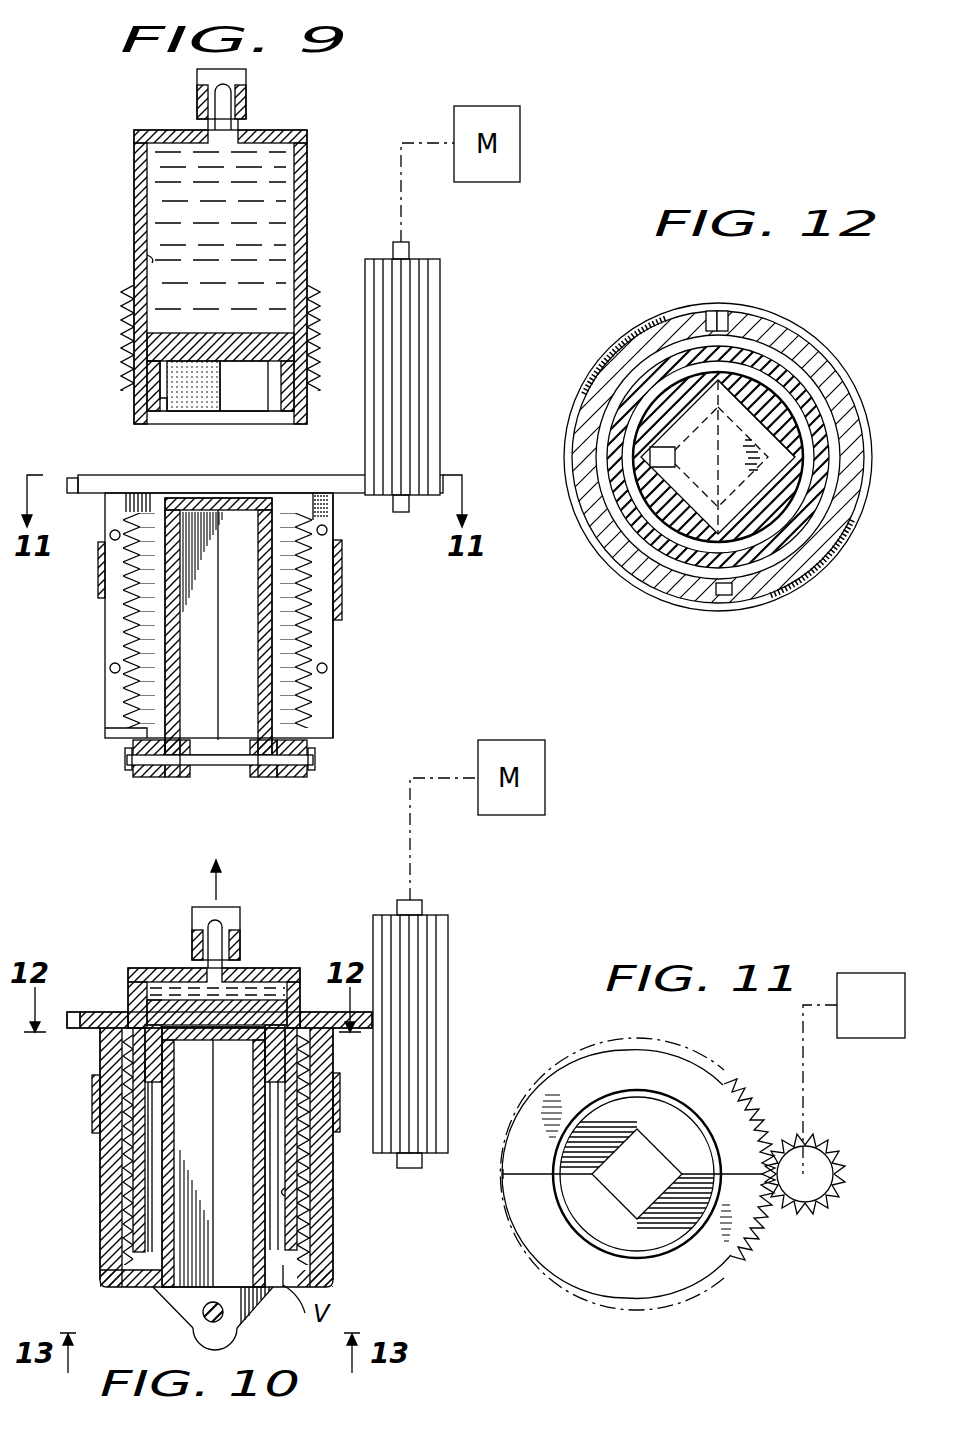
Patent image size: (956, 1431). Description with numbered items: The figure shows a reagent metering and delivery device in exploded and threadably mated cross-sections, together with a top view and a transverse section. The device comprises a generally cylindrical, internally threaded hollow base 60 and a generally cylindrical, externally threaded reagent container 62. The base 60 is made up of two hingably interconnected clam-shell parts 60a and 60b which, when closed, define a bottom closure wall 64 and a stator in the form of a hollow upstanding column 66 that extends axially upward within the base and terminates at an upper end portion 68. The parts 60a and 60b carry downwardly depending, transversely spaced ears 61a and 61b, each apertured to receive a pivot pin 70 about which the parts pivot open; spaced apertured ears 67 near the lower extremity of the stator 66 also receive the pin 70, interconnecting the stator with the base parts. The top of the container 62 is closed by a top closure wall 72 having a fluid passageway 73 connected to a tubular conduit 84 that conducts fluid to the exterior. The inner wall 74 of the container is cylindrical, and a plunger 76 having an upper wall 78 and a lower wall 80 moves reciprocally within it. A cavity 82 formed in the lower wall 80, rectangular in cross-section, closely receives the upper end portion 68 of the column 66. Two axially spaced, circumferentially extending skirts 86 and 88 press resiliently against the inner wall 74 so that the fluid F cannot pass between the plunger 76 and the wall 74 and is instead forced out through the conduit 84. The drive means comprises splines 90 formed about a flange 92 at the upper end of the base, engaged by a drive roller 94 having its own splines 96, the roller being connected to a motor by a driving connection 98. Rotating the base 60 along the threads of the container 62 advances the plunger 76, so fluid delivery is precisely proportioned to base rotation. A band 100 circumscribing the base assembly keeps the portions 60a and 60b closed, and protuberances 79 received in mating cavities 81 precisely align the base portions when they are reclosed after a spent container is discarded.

In FIG. 9, the hollow base 60 is at (325, 621).
In FIG. 10, the hollow base 60 is at (98, 1174).
In FIG. 11, the hollow base 60 is at (566, 1300).
In FIG. 12, the hollow base 60 is at (790, 343).
In FIG. 9, the base part 60a is at (333, 700).
In FIG. 10, the base part 60a is at (325, 1240).
In FIG. 11, the base part 60a is at (675, 1065).
In FIG. 12, the base part 60a is at (813, 548).
In FIG. 10, the base part 60b is at (100, 1230).
In FIG. 11, the base part 60b is at (680, 1280).
In FIG. 12, the base part 60b is at (633, 571).
In FIG. 9, the ear 61a is at (160, 778).
In FIG. 10, the ear 61a is at (255, 1308).
In FIG. 9, the ear 61b is at (133, 778).
In FIG. 10, the ear 61b is at (173, 1302).
In FIG. 9, the reagent container 62 is at (134, 210).
In FIG. 10, the reagent container 62 is at (133, 1150).
In FIG. 12, the reagent container 62 is at (806, 372).
In FIG. 9, the bottom closure wall 64 is at (147, 733).
In FIG. 10, the bottom closure wall 64 is at (123, 1280).
In FIG. 11, the bottom closure wall 64 is at (587, 1210).
In FIG. 9, the stator 66 is at (258, 657).
In FIG. 10, the stator 66 is at (257, 1155).
In FIG. 11, the stator 66 is at (618, 1216).
In FIG. 12, the stator 66 is at (755, 453).
In FIG. 9, the apertured ears 67 is at (180, 777).
In FIG. 10, the apertured ears 67 is at (200, 1313).
In FIG. 9, the upper end portion 68 is at (240, 502).
In FIG. 11, the upper end portion 68 is at (622, 1152).
In FIG. 12, the upper end portion 68 is at (682, 498).
In FIG. 9, the pivot pin 70 is at (222, 765).
In FIG. 10, the pivot pin 70 is at (218, 1302).
In FIG. 9, the top closure wall 72 is at (154, 130).
In FIG. 10, the top closure wall 72 is at (278, 968).
In FIG. 9, the fluid passageway 73 is at (226, 90).
In FIG. 10, the fluid passageway 73 is at (222, 932).
In FIG. 9, the inner wall 74 is at (147, 258).
In FIG. 10, the inner wall 74 is at (285, 1192).
In FIG. 9, the plunger 76 is at (147, 366).
In FIG. 10, the plunger 76 is at (175, 983).
In FIG. 12, the plunger 76 is at (786, 480).
In FIG. 9, the upper wall 78 is at (201, 333).
In FIG. 10, the upper wall 78 is at (233, 1003).
In FIG. 12, the upper wall 78 is at (777, 416).
In FIG. 9, the protuberances 79 is at (327, 668).
In FIG. 12, the protuberances 79 is at (728, 308).
In FIG. 9, the lower wall 80 is at (160, 413).
In FIG. 10, the lower wall 80 is at (270, 1055).
In FIG. 9, the mating cavities 81 is at (110, 668).
In FIG. 12, the mating cavities 81 is at (705, 310).
In FIG. 9, the cavity 82 is at (268, 396).
In FIG. 10, the cavity 82 is at (165, 1058).
In FIG. 12, the cavity 82 is at (666, 478).
In FIG. 9, the tubular conduit 84 is at (197, 76).
In FIG. 10, the tubular conduit 84 is at (192, 913).
In FIG. 9, the skirt 86 is at (155, 337).
In FIG. 10, the skirt 86 is at (143, 1007).
In FIG. 9, the skirt 88 is at (140, 408).
In FIG. 10, the skirt 88 is at (145, 1070).
In FIG. 9, the splines 90 is at (67, 482).
In FIG. 10, the splines 90 is at (68, 1028).
In FIG. 11, the splines 90 is at (757, 1238).
In FIG. 9, the flange 92 is at (88, 475).
In FIG. 11, the flange 92 is at (697, 1260).
In FIG. 9, the drive roller 94 is at (440, 283).
In FIG. 10, the drive roller 94 is at (448, 932).
In FIG. 11, the drive roller 94 is at (817, 1190).
In FIG. 9, the splines 96 is at (425, 328).
In FIG. 10, the splines 96 is at (437, 966).
In FIG. 11, the driving connection 98 is at (805, 1078).
In FIG. 9, the band 100 is at (342, 567).
In FIG. 10, the band 100 is at (92, 1113).
In FIG. 12, the band 100 is at (771, 599).
In FIG. 9, the fluid F is at (160, 182).